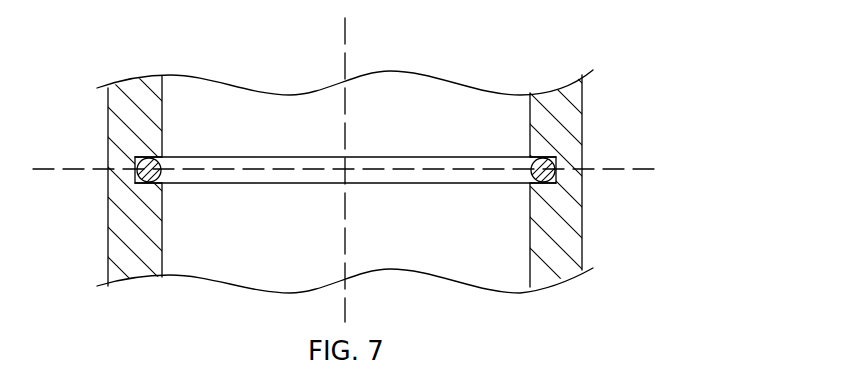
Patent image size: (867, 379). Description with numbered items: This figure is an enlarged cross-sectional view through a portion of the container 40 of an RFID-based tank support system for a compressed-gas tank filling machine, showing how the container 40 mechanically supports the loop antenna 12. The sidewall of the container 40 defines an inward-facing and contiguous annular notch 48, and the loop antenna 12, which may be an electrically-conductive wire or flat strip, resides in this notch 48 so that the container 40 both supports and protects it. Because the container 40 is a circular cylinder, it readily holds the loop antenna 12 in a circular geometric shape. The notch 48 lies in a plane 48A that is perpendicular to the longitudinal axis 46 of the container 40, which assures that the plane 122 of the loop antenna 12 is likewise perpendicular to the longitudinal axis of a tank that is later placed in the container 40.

The loop antenna 12 is at (460, 184).
The plane of loop antenna 122 is at (433, 162).
The container 40 is at (583, 118).
The longitudinal axis 46 is at (345, 30).
The annular notch 48 is at (137, 182).
The plane of notch 48A is at (647, 168).